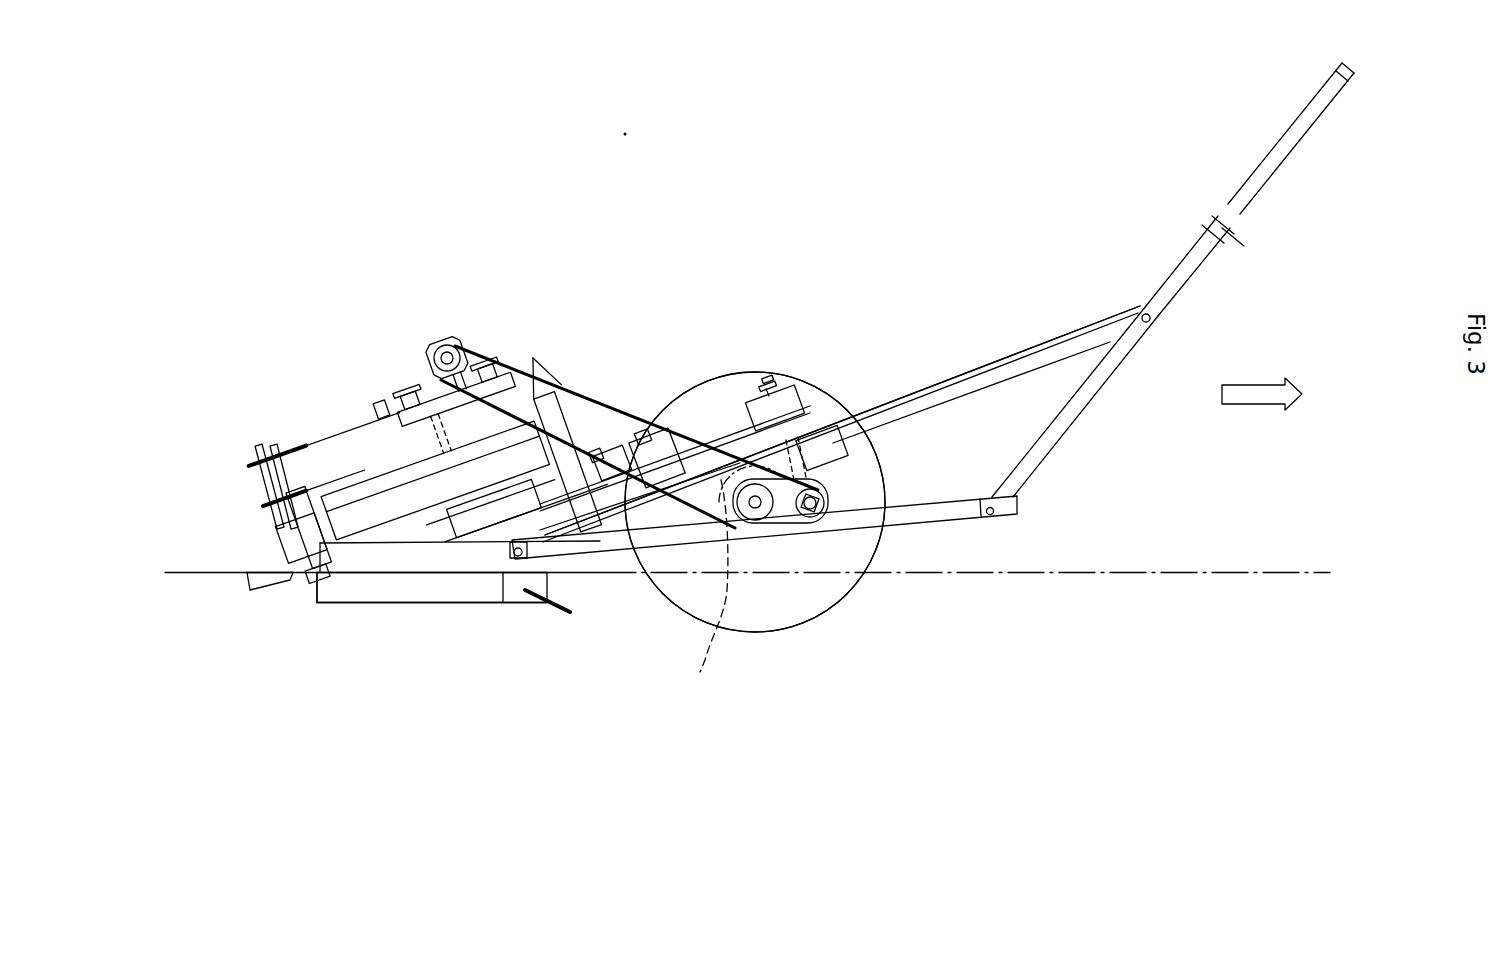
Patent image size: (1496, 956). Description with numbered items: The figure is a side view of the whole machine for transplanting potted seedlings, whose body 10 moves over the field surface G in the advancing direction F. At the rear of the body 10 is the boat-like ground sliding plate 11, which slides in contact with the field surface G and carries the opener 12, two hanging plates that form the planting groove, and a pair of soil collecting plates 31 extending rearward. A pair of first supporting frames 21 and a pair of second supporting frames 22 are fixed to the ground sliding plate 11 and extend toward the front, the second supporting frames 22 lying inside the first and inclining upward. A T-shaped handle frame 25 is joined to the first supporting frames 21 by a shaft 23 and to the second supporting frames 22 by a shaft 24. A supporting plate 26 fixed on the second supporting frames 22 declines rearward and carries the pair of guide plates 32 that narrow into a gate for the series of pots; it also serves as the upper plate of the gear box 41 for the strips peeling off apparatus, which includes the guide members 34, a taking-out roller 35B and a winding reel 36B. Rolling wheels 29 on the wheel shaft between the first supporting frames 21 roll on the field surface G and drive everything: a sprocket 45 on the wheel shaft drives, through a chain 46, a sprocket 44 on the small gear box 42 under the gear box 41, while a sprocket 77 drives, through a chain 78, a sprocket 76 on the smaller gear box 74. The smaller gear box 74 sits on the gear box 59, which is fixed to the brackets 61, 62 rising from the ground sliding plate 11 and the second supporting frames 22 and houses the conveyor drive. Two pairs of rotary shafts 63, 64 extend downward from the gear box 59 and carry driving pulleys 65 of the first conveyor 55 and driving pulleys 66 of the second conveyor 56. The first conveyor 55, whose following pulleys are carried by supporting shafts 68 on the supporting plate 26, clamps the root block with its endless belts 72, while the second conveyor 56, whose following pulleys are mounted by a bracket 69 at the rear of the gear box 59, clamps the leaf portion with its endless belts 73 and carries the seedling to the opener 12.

The body 10 is at (1097, 312).
The ground sliding plate 11 is at (345, 580).
The opener 12 is at (440, 597).
The first supporting frames 21 is at (957, 512).
The second supporting frames 22 is at (1070, 348).
The shaft 23 is at (993, 514).
The shaft 24 is at (1152, 318).
The handle frame 25 is at (1264, 164).
The supporting plate 26 is at (1006, 347).
The rolling wheels 29 is at (828, 405).
The soil collecting plates 31 is at (260, 583).
The guide plates 32 is at (734, 448).
The guide members 34 is at (614, 455).
The taking-out roller 35B is at (639, 438).
The winding reel 36B is at (826, 410).
The gear box 41 is at (770, 380).
The small gear box 42 is at (836, 462).
The sprocket 44 is at (853, 590).
The sprocket 45 is at (756, 522).
The chain 46 is at (784, 522).
The first conveyor 55 is at (539, 470).
The second conveyor 56 is at (366, 484).
The gear box 59 is at (303, 458).
The bracket 61 is at (287, 551).
The bracket 62 is at (558, 440).
The rotary shafts 63 is at (415, 380).
The rotary shafts 64 is at (454, 360).
The driving pulleys 65 is at (482, 485).
The driving pulleys 66 is at (524, 540).
The supporting shafts 68 is at (595, 452).
The bracket 69 is at (247, 452).
The endless belts 72 is at (572, 613).
The endless belts 73 is at (410, 583).
The smaller gear box 74 is at (437, 345).
The sprocket 76 is at (443, 344).
The sprocket 77 is at (700, 672).
The chain 78 is at (634, 470).
The field surface G is at (1150, 578).
The advancing direction F is at (1263, 398).